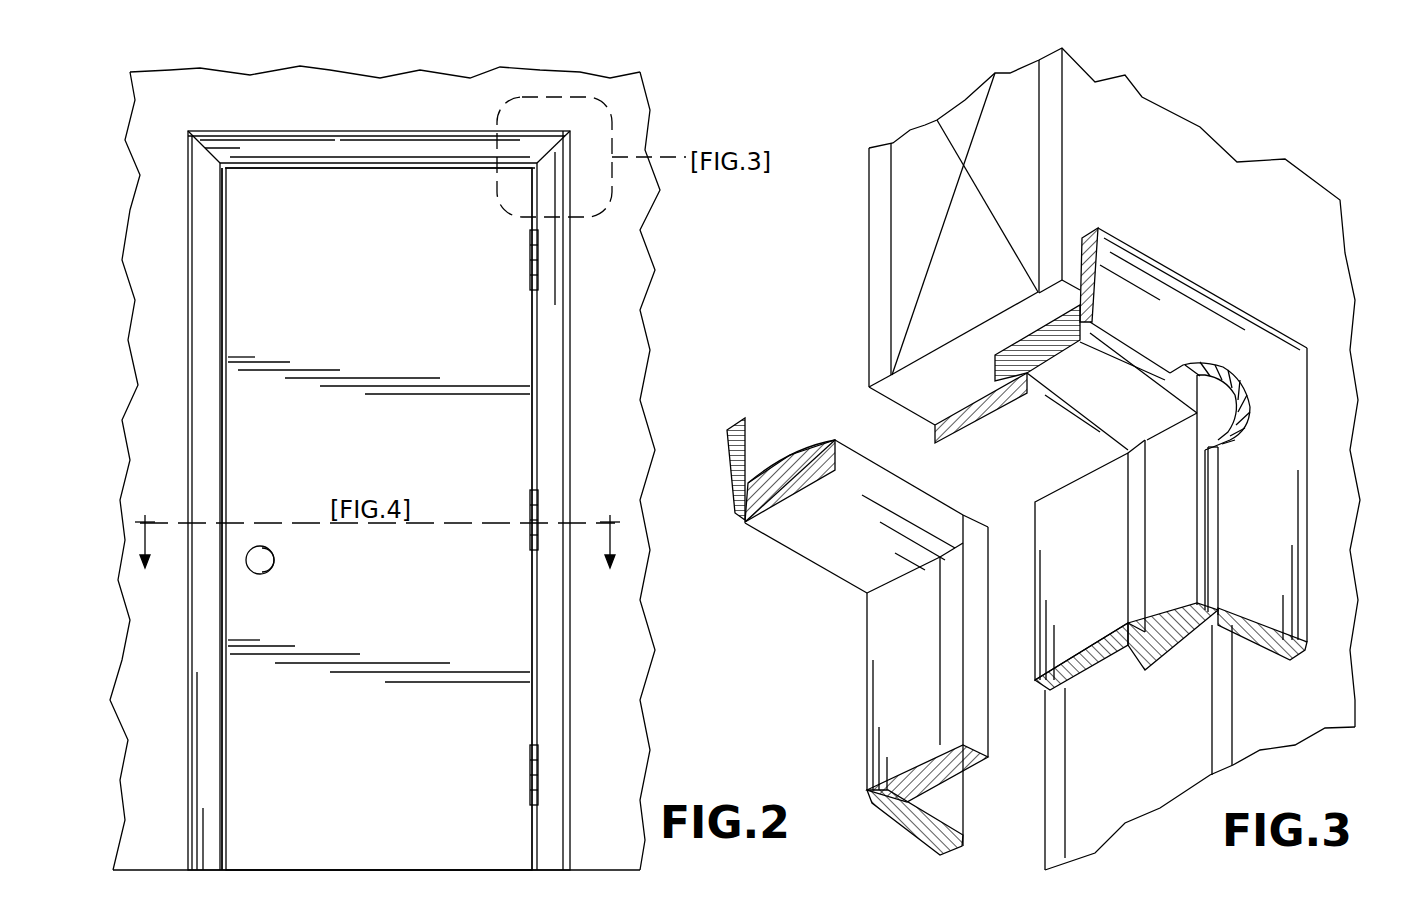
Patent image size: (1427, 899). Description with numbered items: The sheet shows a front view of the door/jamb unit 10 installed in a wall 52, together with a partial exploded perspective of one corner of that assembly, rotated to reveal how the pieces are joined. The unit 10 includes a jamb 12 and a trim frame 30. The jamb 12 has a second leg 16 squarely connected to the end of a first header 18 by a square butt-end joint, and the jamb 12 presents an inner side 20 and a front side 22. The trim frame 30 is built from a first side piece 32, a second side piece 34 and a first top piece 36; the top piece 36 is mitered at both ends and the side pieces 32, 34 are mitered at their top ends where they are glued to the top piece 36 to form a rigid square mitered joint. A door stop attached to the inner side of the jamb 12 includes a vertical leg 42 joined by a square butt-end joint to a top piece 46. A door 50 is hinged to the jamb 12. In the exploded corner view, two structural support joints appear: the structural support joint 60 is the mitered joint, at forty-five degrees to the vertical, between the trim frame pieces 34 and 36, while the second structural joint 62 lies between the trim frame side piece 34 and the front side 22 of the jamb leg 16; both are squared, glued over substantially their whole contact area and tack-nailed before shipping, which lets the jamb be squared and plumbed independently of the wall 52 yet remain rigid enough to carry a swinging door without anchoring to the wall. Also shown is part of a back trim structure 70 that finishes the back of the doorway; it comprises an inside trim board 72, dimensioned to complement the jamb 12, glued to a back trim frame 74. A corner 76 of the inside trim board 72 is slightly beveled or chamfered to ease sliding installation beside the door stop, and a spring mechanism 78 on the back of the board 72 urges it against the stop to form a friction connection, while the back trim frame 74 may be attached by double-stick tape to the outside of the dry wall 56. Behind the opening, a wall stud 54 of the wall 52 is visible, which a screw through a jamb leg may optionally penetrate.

In FIG. 2, the unit 10 is at (230, 55).
In FIG. 2, the jamb 12 is at (232, 277).
In FIG. 2, the second leg 16 is at (527, 345).
In FIG. 3, the second leg 16 is at (1180, 505).
In FIG. 2, the first header 18 is at (370, 172).
In FIG. 3, the first header 18 is at (1093, 413).
In FIG. 3, the inner side 20 is at (1165, 528).
In FIG. 2, the front side 22 is at (228, 475).
In FIG. 3, the front side 22 is at (1182, 495).
In FIG. 2, the trim frame 30 is at (198, 277).
In FIG. 2, the first side piece 32 is at (205, 408).
In FIG. 2, the second side piece 34 is at (555, 360).
In FIG. 3, the second side piece 34 is at (1285, 440).
In FIG. 2, the first top piece 36 is at (445, 145).
In FIG. 3, the first top piece 36 is at (1185, 300).
In FIG. 3, the vertical leg 42 is at (1090, 663).
In FIG. 3, the top piece 46 is at (958, 443).
In FIG. 2, the door 50 is at (293, 190).
In FIG. 2, the wall 52 is at (622, 250).
In FIG. 3, the wall 52 is at (1165, 125).
In FIG. 3, the wall stud 54 is at (963, 115).
In FIG. 3, the dry wall 56 is at (880, 160).
In FIG. 3, the structural support joint 60 is at (1288, 357).
In FIG. 3, the second structural joint 62 is at (1125, 362).
In FIG. 3, the back trim structure 70 is at (825, 588).
In FIG. 3, the inside trim board 72 is at (898, 700).
In FIG. 3, the back trim frame 74 is at (763, 435).
In FIG. 3, the corner 76 is at (877, 508).
In FIG. 3, the spring mechanism 78 is at (803, 443).